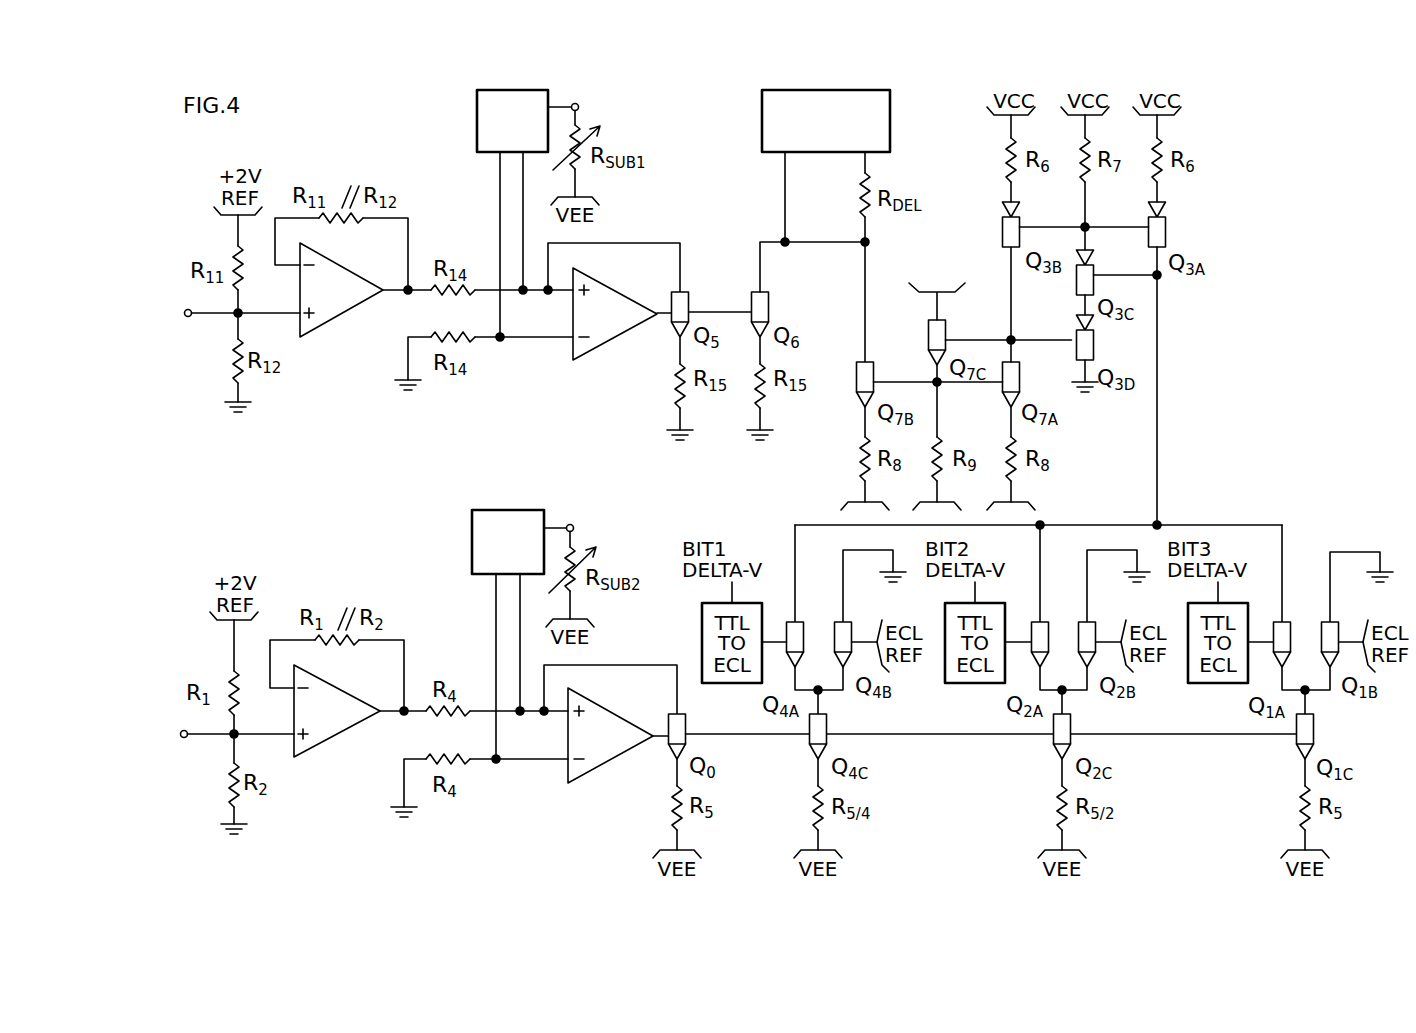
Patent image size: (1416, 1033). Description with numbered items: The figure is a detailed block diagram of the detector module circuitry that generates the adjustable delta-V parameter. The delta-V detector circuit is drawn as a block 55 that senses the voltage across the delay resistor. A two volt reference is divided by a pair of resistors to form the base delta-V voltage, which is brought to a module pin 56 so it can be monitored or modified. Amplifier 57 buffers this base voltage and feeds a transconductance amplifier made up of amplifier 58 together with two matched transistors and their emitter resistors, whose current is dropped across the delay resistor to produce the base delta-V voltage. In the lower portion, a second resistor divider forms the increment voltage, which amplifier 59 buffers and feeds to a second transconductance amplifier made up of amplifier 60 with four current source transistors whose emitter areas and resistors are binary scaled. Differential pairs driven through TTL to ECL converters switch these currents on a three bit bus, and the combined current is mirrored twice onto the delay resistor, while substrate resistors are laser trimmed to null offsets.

The delta-V detector circuit 55 is at (760, 133).
The module pin 56 is at (186, 317).
The amplifier 57 is at (340, 316).
The amplifier 58 is at (613, 345).
The amplifier 59 is at (337, 737).
The amplifier 60 is at (611, 760).